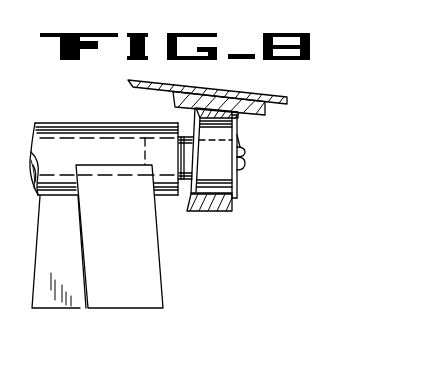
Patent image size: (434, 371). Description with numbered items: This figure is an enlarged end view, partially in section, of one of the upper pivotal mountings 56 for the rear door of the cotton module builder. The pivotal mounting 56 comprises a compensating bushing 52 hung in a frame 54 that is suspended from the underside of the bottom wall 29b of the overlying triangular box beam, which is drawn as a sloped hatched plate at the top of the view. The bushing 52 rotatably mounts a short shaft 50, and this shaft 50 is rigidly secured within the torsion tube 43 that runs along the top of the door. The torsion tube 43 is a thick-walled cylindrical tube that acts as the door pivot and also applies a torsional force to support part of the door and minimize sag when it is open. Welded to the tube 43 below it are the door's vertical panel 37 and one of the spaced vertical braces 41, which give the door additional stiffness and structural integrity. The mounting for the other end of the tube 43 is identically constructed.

The bottom wall 29b is at (268, 95).
The torsion tube 43 is at (96, 122).
The vertical brace 41 is at (160, 255).
The vertical panel 37 is at (73, 307).
The short shaft 50 is at (188, 195).
The compensating bushing 52 is at (227, 176).
The frame 54 is at (230, 205).
The pivotal mounting 56 is at (248, 132).